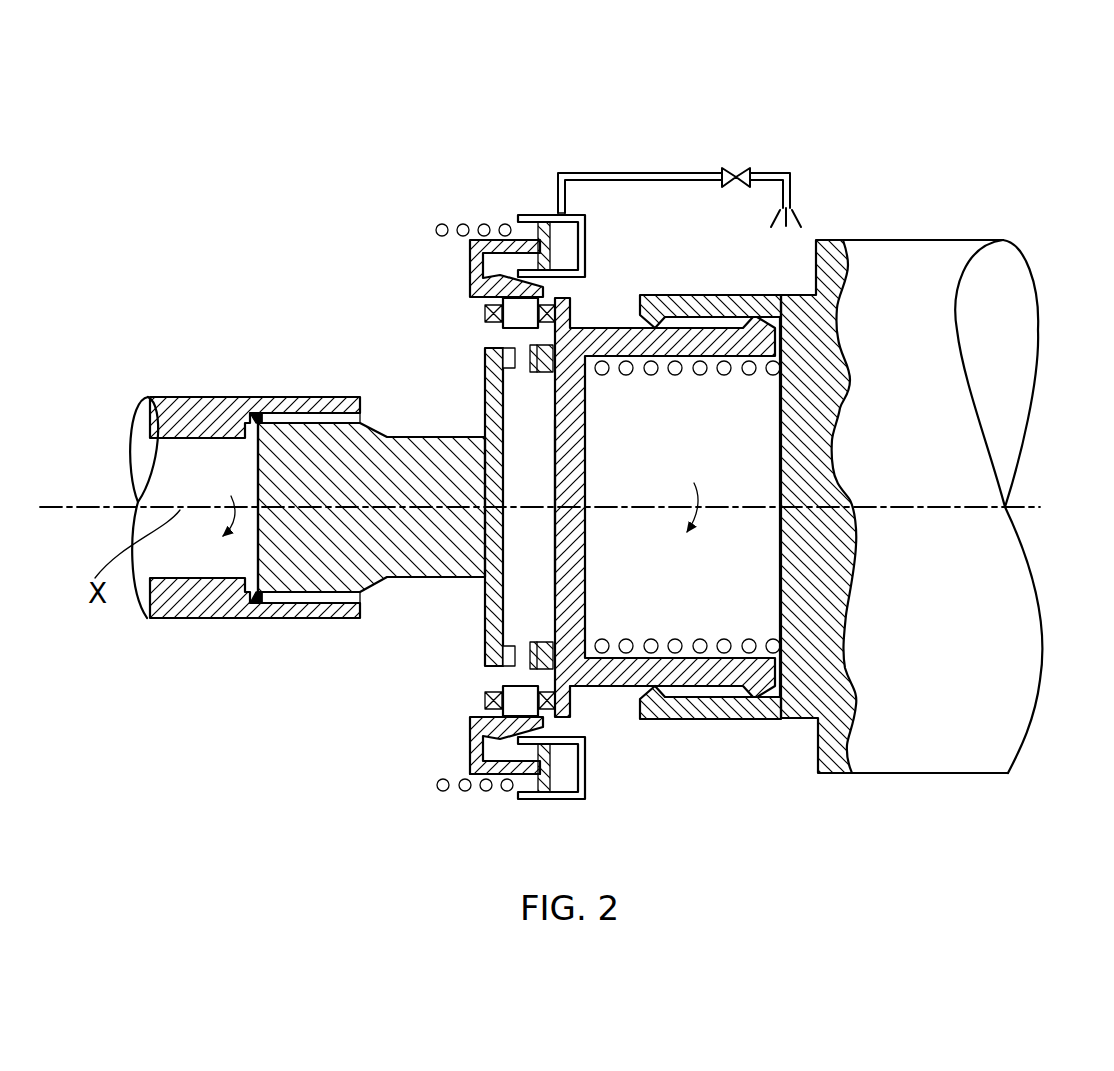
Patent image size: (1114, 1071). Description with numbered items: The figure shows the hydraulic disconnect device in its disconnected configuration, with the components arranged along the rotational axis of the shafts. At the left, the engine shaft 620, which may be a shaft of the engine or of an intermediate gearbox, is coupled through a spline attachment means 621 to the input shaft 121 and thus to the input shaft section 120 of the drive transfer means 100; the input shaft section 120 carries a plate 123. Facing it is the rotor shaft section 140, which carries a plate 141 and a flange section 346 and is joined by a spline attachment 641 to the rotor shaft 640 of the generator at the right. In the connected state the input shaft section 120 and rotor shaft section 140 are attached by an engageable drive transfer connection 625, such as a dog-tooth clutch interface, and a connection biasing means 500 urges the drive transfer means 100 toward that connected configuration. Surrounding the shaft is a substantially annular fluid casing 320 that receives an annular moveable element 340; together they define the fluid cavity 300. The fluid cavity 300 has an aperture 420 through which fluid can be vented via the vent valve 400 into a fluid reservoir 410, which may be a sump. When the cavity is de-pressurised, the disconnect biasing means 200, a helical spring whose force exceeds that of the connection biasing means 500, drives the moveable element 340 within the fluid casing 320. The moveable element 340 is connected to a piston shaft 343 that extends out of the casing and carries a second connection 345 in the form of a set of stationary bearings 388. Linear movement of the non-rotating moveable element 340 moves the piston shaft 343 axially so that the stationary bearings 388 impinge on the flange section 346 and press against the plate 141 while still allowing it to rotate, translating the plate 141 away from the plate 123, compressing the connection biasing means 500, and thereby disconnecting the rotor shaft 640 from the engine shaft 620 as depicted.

The drive transfer means 100 is at (462, 662).
The input shaft section 120 is at (423, 437).
The input shaft 121 is at (293, 440).
The plate 123 is at (485, 378).
The rotor shaft section 140 is at (583, 430).
The plate 141 is at (568, 578).
The disconnect biasing means 200 is at (462, 222).
The fluid cavity 300 is at (565, 245).
The fluid casing 320 is at (588, 744).
The moveable element 340 is at (503, 787).
The piston shaft 343 is at (473, 765).
The second connection 345 is at (545, 292).
The flange section 346 is at (575, 688).
The stationary bearings 388 is at (515, 687).
The vent valve 400 is at (724, 168).
The fluid reservoir 410 is at (775, 172).
The aperture 420 is at (557, 213).
The connection biasing means 500 is at (773, 364).
The engine shaft 620 is at (158, 518).
The spline attachment means 621 is at (317, 418).
The engageable drive transfer connection 625 is at (487, 314).
The rotor shaft 640 is at (958, 512).
The spline attachment 641 is at (727, 690).